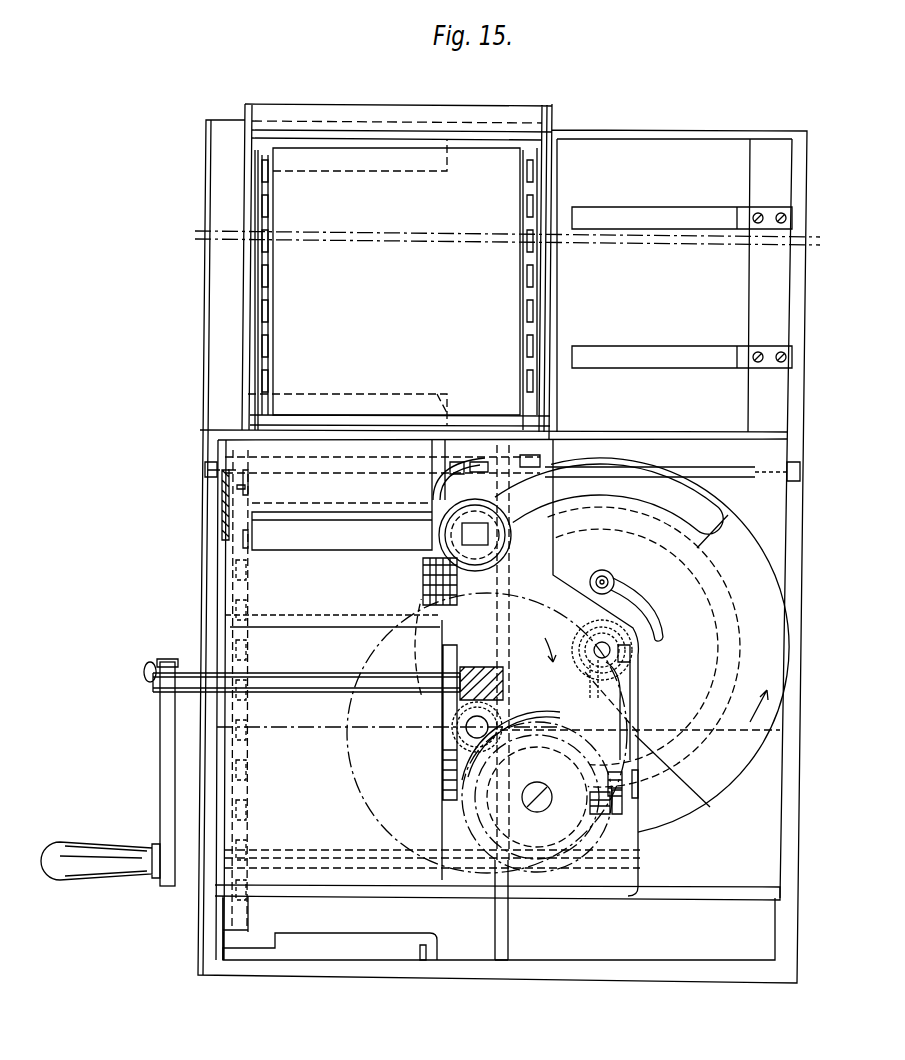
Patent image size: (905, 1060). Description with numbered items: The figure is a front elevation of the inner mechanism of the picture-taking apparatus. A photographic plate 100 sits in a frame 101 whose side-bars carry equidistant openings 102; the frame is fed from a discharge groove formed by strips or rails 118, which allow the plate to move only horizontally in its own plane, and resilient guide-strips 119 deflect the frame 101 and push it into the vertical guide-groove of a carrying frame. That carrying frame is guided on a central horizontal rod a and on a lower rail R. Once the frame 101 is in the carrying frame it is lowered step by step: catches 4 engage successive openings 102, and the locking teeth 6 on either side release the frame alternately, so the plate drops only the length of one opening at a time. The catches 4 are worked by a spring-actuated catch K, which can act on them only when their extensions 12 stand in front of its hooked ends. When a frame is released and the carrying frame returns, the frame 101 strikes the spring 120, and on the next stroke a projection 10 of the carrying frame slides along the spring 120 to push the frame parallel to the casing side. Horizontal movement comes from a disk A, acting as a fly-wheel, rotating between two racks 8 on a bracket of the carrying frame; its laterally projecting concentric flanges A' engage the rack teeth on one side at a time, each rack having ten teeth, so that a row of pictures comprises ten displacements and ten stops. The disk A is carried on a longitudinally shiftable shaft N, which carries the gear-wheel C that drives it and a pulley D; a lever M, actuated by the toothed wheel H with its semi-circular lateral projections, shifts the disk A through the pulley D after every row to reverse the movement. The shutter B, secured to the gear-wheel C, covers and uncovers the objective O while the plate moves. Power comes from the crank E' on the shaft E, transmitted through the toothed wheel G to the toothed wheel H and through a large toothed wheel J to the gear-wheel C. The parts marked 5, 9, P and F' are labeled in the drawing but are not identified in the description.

The photographic plate 100 is at (252, 313).
The plate frame 101 is at (258, 285).
The openings 102 is at (262, 256).
The strips or rails 118 is at (447, 171).
The resilient guide-strips 119 is at (628, 212).
The spring 120 is at (378, 955).
The catches 4 is at (248, 487).
The hatched bar 5 is at (222, 500).
The locking tooth 6 is at (222, 536).
The racks 8 is at (297, 618).
The carriage 9 is at (377, 652).
The projection 10 is at (223, 942).
The extensions 12 is at (248, 475).
The catch K is at (495, 465).
The platen wheel P is at (467, 522).
The objective O is at (515, 652).
The shaft E is at (302, 670).
The crank E' is at (109, 772).
The bearing block F' is at (486, 750).
The toothed wheel G is at (500, 715).
The large toothed wheel J is at (378, 775).
The toothed wheel H is at (576, 855).
The disk A is at (602, 668).
The flanges A' is at (657, 647).
The shutter B is at (769, 695).
The gear-wheel C is at (588, 646).
The pulley D is at (606, 642).
The shaft N is at (588, 670).
The lever M is at (630, 697).
The central horizontal rod a is at (672, 471).
The lower rail R is at (308, 877).